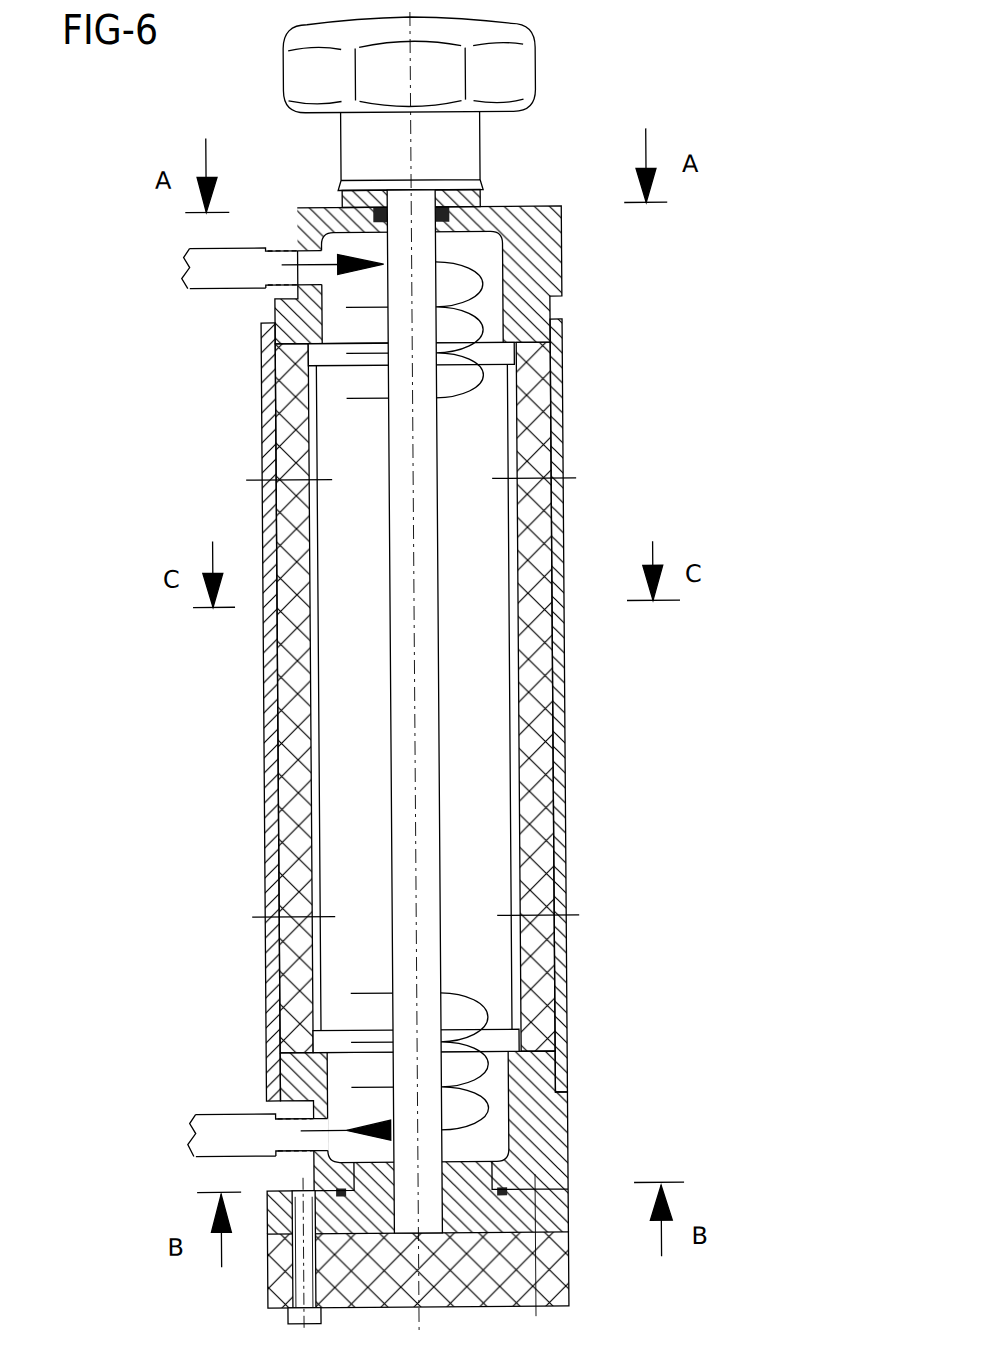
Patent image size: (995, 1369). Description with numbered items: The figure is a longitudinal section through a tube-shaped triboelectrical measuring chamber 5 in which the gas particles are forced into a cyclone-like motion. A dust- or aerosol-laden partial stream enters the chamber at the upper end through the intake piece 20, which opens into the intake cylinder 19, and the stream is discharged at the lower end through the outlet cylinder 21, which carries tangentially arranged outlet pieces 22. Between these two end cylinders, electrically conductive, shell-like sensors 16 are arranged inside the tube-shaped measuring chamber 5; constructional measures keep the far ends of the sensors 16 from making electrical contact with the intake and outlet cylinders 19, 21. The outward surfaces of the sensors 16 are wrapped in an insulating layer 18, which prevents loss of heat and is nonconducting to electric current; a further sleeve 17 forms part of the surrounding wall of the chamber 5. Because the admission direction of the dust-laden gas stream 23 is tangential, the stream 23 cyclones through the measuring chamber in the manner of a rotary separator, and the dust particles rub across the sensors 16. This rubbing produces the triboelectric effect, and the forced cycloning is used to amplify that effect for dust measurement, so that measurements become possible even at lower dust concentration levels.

The triboelectrical measuring chamber 5 is at (565, 837).
The sensors 16 is at (550, 737).
The outer sleeve 17 is at (553, 540).
The insulating layer 18 is at (528, 387).
The intake cylinder 19 is at (537, 252).
The intake piece 20 is at (220, 270).
The outlet cylinder 21 is at (523, 1145).
The outlet pieces 22 is at (208, 1133).
The dust-laden gas stream 23 is at (318, 402).